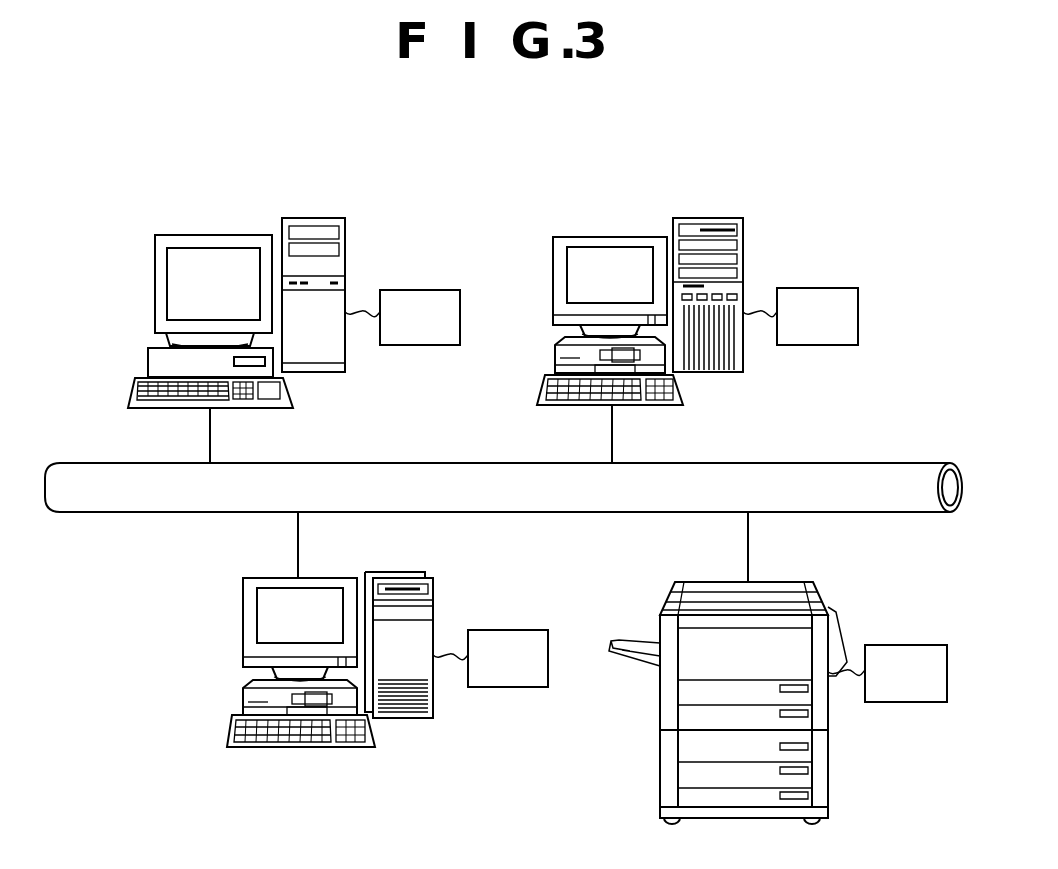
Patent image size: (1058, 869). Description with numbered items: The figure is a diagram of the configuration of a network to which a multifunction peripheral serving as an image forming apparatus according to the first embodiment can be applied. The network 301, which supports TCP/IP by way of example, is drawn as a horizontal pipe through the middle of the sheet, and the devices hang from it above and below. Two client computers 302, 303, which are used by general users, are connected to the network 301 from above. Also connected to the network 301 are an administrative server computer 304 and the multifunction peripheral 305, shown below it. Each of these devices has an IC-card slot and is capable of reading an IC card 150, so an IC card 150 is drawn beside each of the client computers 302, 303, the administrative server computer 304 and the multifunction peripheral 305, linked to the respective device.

The network 301 is at (855, 463).
The client computer 302 is at (248, 235).
The client computer 303 is at (642, 237).
The administrative server computer 304 is at (340, 578).
The multifunction peripheral 305 is at (792, 582).
The IC card 150 is at (420, 290).